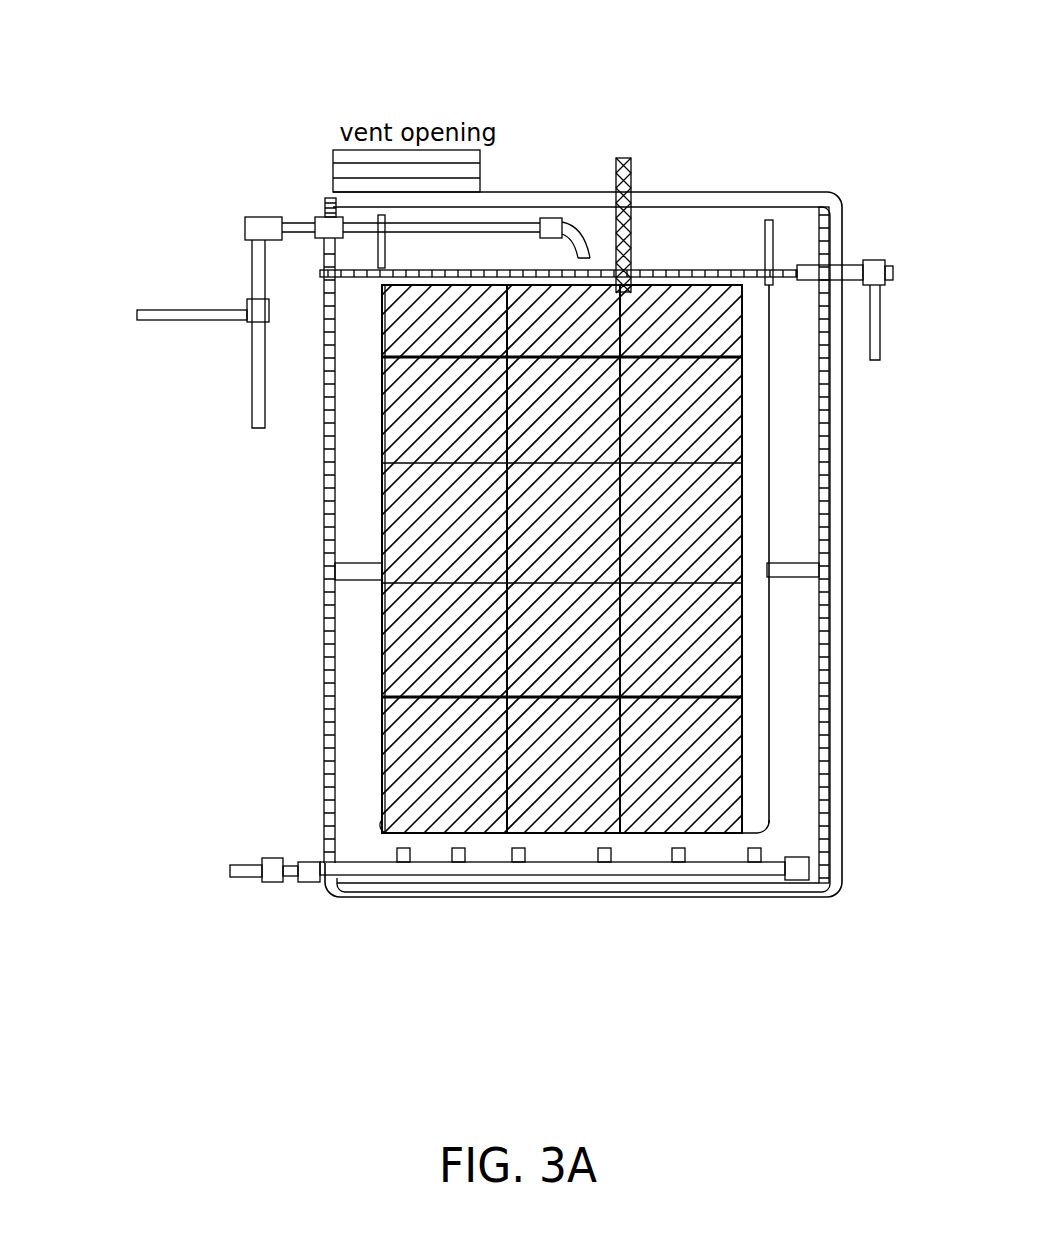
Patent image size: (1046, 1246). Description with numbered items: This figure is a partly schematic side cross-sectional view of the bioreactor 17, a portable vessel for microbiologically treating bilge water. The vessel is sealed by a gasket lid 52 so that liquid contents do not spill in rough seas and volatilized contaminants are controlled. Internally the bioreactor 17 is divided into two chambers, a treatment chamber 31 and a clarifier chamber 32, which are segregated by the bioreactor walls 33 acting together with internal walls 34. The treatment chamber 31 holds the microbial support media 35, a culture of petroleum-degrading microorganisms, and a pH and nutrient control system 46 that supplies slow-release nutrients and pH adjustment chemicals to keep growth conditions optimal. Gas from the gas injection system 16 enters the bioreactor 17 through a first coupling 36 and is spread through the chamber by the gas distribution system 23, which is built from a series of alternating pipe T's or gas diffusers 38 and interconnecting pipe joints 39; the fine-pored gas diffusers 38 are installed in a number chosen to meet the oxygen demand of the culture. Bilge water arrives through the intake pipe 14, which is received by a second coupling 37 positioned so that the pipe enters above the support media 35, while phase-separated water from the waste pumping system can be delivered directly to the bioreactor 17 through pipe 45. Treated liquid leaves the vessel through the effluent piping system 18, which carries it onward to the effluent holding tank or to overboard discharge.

The bioreactor 17 is at (583, 449).
The intake pipe 14 is at (258, 570).
The gas injection system 16 is at (243, 885).
The effluent piping system 18 is at (877, 435).
The gas distribution system 23 is at (373, 879).
The treatment chamber 31 is at (750, 811).
The clarifier chamber 32 is at (792, 757).
The bioreactor walls 33 is at (832, 653).
The internal walls 34 is at (772, 538).
The microbial support media 35 is at (745, 493).
The first coupling 36 is at (308, 858).
The second coupling 37 is at (315, 205).
The gas diffusers 38 is at (520, 864).
The interconnecting pipe joints 39 is at (680, 864).
The pipe 45 is at (57, 315).
The pH and nutrient control system 46 is at (622, 210).
The gasket lid 52 is at (723, 190).